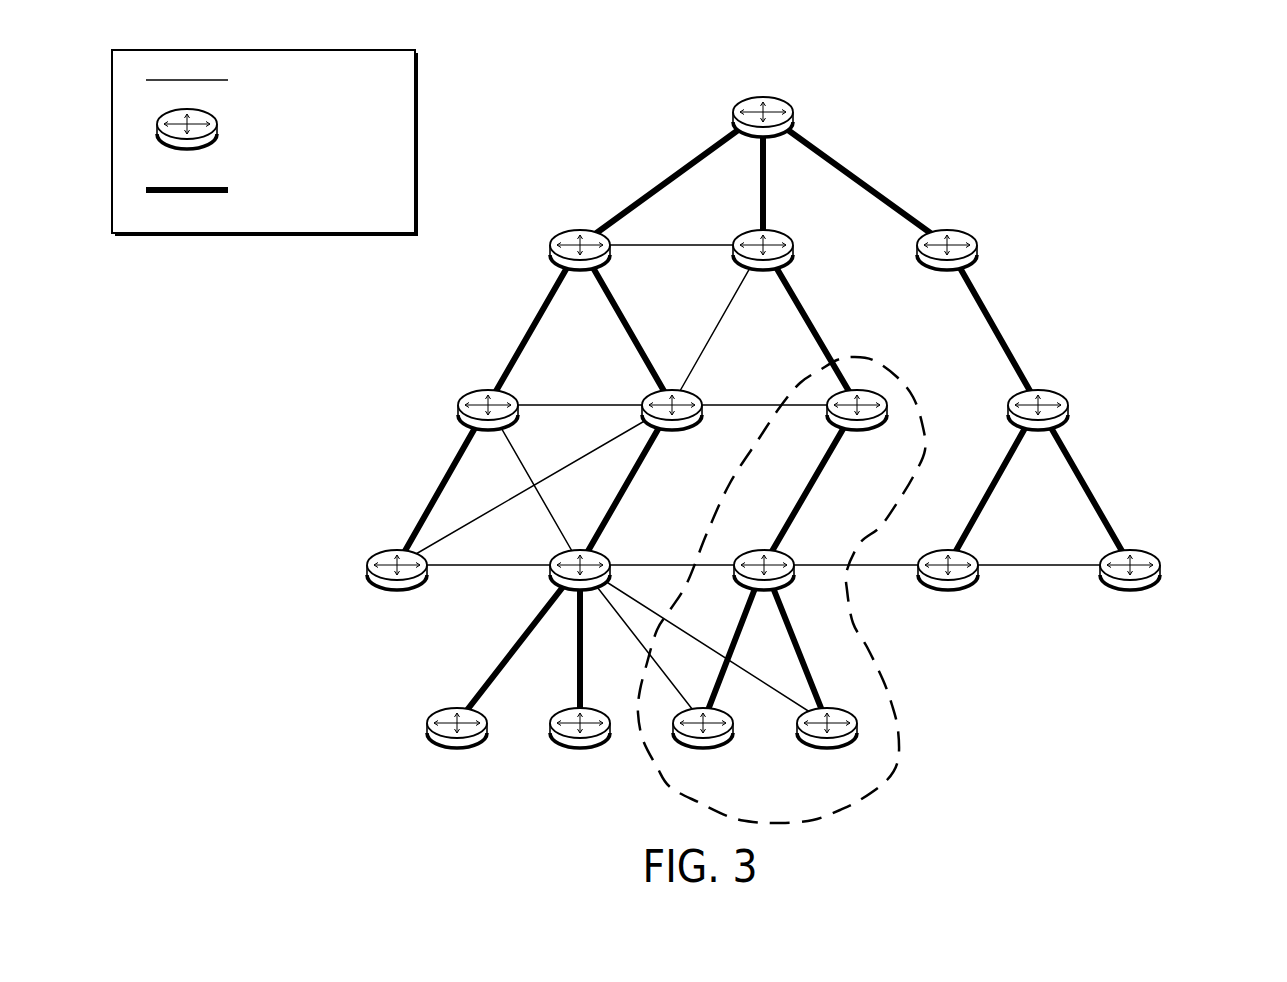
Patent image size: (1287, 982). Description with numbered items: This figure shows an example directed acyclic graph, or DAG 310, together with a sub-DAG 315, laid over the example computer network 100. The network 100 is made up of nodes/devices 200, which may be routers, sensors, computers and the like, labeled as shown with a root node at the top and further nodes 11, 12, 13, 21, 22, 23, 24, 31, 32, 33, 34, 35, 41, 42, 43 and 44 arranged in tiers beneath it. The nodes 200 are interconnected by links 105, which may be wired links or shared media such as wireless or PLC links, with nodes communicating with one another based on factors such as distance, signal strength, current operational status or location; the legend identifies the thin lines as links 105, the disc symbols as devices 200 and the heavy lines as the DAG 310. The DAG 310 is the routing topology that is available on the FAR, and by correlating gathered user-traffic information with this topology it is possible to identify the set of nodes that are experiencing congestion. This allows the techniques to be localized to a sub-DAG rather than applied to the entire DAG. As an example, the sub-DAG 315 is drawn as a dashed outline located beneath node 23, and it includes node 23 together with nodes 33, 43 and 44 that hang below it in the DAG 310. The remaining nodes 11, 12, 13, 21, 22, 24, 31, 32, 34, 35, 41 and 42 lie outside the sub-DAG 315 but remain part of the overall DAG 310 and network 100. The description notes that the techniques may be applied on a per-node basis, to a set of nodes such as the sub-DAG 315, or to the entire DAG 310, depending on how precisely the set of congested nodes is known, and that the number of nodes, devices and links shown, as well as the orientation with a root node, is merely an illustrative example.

The computer network 100 is at (1187, 108).
The links 105 is at (638, 395).
The nodes/devices 200 is at (270, 129).
The DAG 310 is at (638, 417).
The sub-DAG 315 is at (901, 716).
The node 11 is at (580, 270).
The node 12 is at (763, 270).
The node 13 is at (947, 270).
The node 21 is at (488, 428).
The node 22 is at (672, 428).
The node 23 is at (857, 429).
The node 24 is at (1038, 429).
The node 31 is at (397, 588).
The node 32 is at (582, 597).
The node 33 is at (764, 588).
The node 34 is at (948, 588).
The node 35 is at (1130, 588).
The node 41 is at (457, 747).
The node 42 is at (580, 747).
The node 43 is at (703, 747).
The node 44 is at (827, 747).